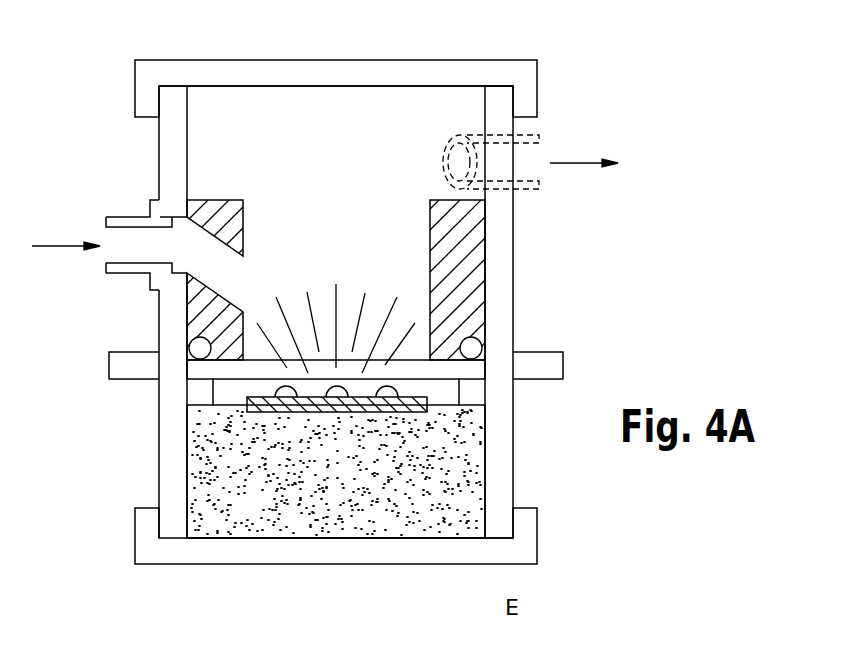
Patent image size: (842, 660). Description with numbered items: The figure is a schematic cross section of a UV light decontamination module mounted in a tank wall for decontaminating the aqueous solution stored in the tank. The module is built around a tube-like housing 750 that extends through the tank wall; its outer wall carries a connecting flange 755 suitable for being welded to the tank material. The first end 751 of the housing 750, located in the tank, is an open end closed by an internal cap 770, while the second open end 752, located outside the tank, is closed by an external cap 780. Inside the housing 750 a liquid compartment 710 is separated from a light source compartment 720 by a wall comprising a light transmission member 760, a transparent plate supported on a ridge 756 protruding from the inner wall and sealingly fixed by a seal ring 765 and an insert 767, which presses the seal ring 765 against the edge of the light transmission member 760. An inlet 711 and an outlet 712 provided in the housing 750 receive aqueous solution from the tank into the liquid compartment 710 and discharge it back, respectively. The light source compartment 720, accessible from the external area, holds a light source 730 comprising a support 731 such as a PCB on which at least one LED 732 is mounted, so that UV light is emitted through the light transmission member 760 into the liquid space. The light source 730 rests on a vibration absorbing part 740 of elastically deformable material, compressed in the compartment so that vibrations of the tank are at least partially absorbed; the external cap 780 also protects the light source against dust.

The internal cap 770 is at (367, 56).
The liquid compartment 710 is at (274, 155).
The first end 751 is at (425, 94).
The outlet 712 is at (536, 133).
The inlet 711 is at (135, 222).
The housing 750 is at (520, 244).
The insert 767 is at (480, 270).
The seal ring 765 is at (476, 346).
The connecting flange 755 is at (545, 351).
The ridge 756 is at (472, 392).
The light transmission member 760 is at (412, 368).
The light source compartment 720 is at (227, 400).
The light source 730 is at (223, 449).
The support 731 is at (313, 408).
The LED 732 is at (288, 394).
The vibration absorbing part 740 is at (452, 466).
The second open end 752 is at (250, 530).
The external cap 780 is at (316, 570).